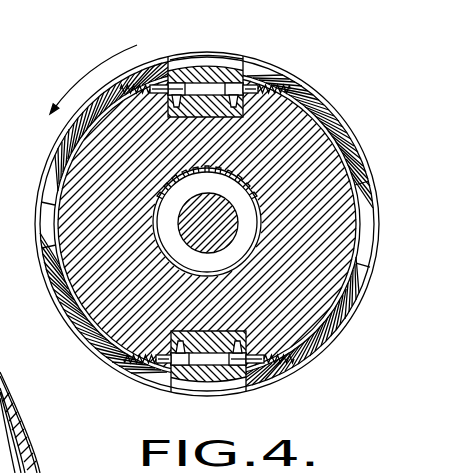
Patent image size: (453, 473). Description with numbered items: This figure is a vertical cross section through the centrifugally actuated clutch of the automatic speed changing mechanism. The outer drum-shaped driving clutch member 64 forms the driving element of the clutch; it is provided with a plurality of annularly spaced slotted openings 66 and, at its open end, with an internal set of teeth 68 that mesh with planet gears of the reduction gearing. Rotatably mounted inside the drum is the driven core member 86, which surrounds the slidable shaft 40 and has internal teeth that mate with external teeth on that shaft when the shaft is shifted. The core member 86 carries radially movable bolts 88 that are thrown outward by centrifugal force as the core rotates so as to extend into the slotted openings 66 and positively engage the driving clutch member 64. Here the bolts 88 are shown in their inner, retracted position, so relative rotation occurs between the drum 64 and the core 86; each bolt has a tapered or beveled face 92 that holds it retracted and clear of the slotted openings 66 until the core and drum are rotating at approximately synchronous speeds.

The slidable shaft 40 is at (219, 198).
The drum-shaped driving clutch member 64 is at (368, 297).
The slotted openings 66 is at (372, 244).
The internal set of teeth 68 is at (2, 392).
The core member 86 is at (80, 278).
The radially movable bolts 88 is at (230, 80).
The tapered or beveled face 92 is at (223, 63).